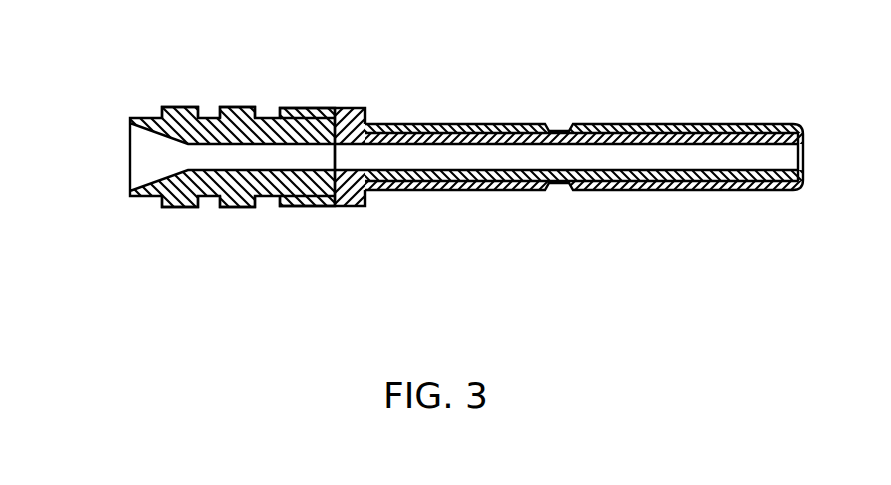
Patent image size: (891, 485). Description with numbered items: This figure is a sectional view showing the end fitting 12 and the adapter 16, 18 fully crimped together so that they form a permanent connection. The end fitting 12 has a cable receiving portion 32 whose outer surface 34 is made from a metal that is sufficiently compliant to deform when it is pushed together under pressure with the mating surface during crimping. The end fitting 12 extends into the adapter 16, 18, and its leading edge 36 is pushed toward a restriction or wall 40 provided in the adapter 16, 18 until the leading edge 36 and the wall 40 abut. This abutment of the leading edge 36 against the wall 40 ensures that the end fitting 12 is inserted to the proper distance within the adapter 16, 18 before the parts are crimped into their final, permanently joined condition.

The end fitting 12 is at (182, 106).
The cable receiving portion 32 is at (208, 116).
The outer surface 34 is at (282, 207).
The leading edge 36 is at (334, 108).
The wall 40 is at (335, 108).
The adapter 16 is at (410, 119).
The adapter 18 is at (581, 157).